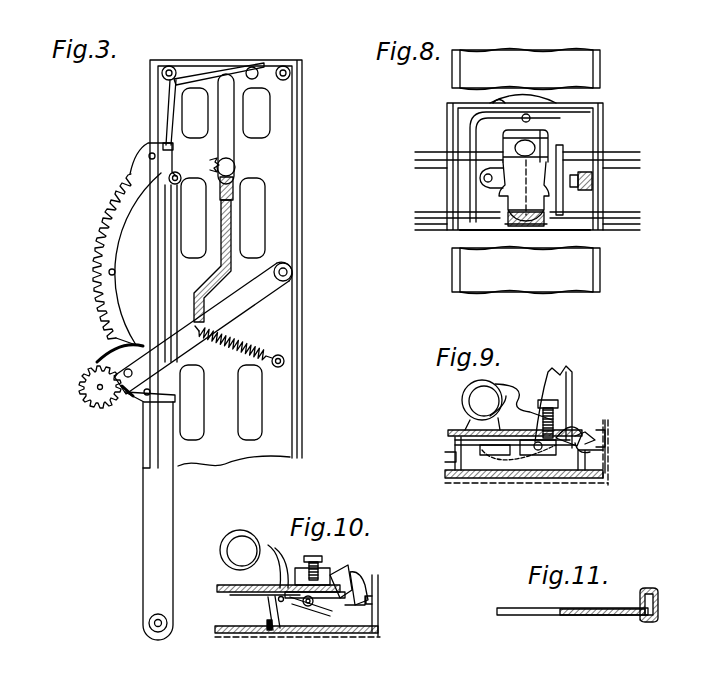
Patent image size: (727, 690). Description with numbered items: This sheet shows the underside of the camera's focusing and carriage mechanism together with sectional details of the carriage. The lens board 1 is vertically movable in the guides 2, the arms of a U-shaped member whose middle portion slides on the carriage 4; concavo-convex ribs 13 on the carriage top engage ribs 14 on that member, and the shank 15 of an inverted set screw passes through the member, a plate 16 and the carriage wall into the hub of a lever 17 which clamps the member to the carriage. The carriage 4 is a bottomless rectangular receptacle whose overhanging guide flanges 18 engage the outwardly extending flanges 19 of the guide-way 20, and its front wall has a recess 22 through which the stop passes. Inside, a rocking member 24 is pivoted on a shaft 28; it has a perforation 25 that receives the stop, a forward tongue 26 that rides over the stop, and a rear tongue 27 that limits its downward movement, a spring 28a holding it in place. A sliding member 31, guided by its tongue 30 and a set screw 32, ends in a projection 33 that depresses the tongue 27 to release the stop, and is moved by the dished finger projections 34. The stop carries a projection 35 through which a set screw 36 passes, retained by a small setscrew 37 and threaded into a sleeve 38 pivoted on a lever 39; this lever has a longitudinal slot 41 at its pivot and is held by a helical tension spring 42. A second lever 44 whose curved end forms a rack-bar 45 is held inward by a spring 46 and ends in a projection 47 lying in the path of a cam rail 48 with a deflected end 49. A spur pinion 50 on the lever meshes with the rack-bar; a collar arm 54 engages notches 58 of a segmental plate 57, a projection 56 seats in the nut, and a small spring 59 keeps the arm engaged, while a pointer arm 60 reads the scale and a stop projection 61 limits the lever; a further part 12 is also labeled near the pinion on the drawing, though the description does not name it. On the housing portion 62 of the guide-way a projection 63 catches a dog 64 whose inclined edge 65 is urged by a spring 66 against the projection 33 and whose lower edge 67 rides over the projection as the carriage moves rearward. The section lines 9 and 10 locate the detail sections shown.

In FIG. 11, the lens board 1 is at (606, 617).
In FIG. 11, the guides 2 is at (658, 607).
In FIG. 3, the carriage 4 is at (191, 440).
In FIG. 8, the section line 9— 9 is at (526, 310).
In FIG. 3, the section line 10— 10 is at (303, 246).
In FIG. 8, the section line 10— 10 is at (571, 305).
In FIG. 3, the pawl 12 is at (96, 359).
In FIG. 3, the concavo-convex ribs 13 is at (233, 160).
In FIG. 8, the concavo-convex ribs 13 is at (596, 160).
In FIG. 9, the concavo-convex ribs 13 is at (588, 444).
In FIG. 10, the concavo-convex ribs 13 is at (300, 568).
In FIG. 9, the ribs 14 is at (518, 404).
In FIG. 10, the ribs 14 is at (290, 568).
In FIG. 9, the set screw shank 15 is at (545, 410).
In FIG. 10, the set screw shank 15 is at (318, 567).
In FIG. 8, the plate 16 is at (568, 157).
In FIG. 9, the plate 16 is at (579, 430).
In FIG. 10, the plate 16 is at (338, 572).
In FIG. 9, the lever 17 is at (563, 418).
In FIG. 10, the lever 17 is at (336, 566).
In FIG. 8, the guide flanges 18 is at (447, 124).
In FIG. 3, the flanges 19 is at (150, 112).
In FIG. 8, the flanges 19 is at (447, 268).
In FIG. 9, the flanges 19 is at (602, 463).
In FIG. 3, the guide-way 20 is at (271, 460).
In FIG. 8, the guide-way 20 is at (481, 283).
In FIG. 9, the guide-way 20 is at (448, 479).
In FIG. 8, the recess 22 is at (549, 100).
In FIG. 8, the rocking member 24 is at (524, 195).
In FIG. 9, the rocking member 24 is at (557, 457).
In FIG. 8, the perforation 25 is at (540, 148).
In FIG. 9, the perforation 25 is at (514, 446).
In FIG. 8, the tongue 26 is at (530, 140).
In FIG. 9, the tongue 26 is at (498, 442).
In FIG. 8, the tongue 27 is at (508, 224).
In FIG. 9, the tongue 27 is at (607, 444).
In FIG. 9, the shaft 28 is at (534, 451).
In FIG. 10, the shaft 28 is at (309, 608).
In FIG. 8, the spring 28a is at (486, 160).
In FIG. 9, the spring 28a is at (478, 455).
In FIG. 9, the tongue 30 is at (500, 441).
In FIG. 10, the tongue 30 is at (280, 548).
In FIG. 9, the sliding member 31 is at (448, 431).
In FIG. 10, the sliding member 31 is at (230, 589).
In FIG. 9, the set screw 32 is at (452, 429).
In FIG. 10, the set screw 32 is at (222, 578).
In FIG. 8, the projection 33 is at (472, 224).
In FIG. 9, the projection 33 is at (591, 437).
In FIG. 10, the projection 33 is at (348, 596).
In FIG. 9, the digitally engageable projections 34 is at (483, 390).
In FIG. 10, the digitally engageable projections 34 is at (240, 550).
In FIG. 3, the projection 35 is at (236, 166).
In FIG. 3, the set screw 36 is at (233, 192).
In FIG. 3, the small setscrew 37 is at (205, 155).
In FIG. 3, the threaded sleeve 38 is at (232, 239).
In FIG. 3, the lever 39 is at (256, 297).
In FIG. 3, the longitudinal slot 41 is at (298, 271).
In FIG. 3, the helical tension spring 42 is at (264, 355).
In FIG. 3, the lever 44 is at (150, 485).
In FIG. 3, the rack-bar 45 is at (95, 238).
In FIG. 3, the spring 46 is at (213, 68).
In FIG. 3, the projection 47 is at (170, 148).
In FIG. 8, the cam member or rail 48 is at (470, 140).
In FIG. 9, the cam member or rail 48 is at (470, 458).
In FIG. 8, the deflected end portion 49 is at (492, 103).
In FIG. 3, the spur pinion 50 is at (96, 390).
In FIG. 3, the projecting arm 54 is at (147, 395).
In FIG. 3, the upwardly extending projection 56 is at (98, 306).
In FIG. 3, the segmental plate 57 is at (90, 280).
In FIG. 3, the notches 58 is at (90, 256).
In FIG. 3, the small spring 59 is at (140, 364).
In FIG. 3, the pointer arm 60 is at (94, 360).
In FIG. 3, the stop projection 61 is at (160, 175).
In FIG. 10, the guide-way portion 62 is at (334, 636).
In FIG. 10, the projection 63 is at (266, 622).
In FIG. 8, the dog 64 is at (586, 180).
In FIG. 10, the dog 64 is at (294, 604).
In FIG. 10, the inclined edge 65 is at (348, 608).
In FIG. 8, the spring 66 is at (564, 158).
In FIG. 10, the spring 66 is at (279, 599).
In FIG. 10, the lower edge 67 is at (283, 612).